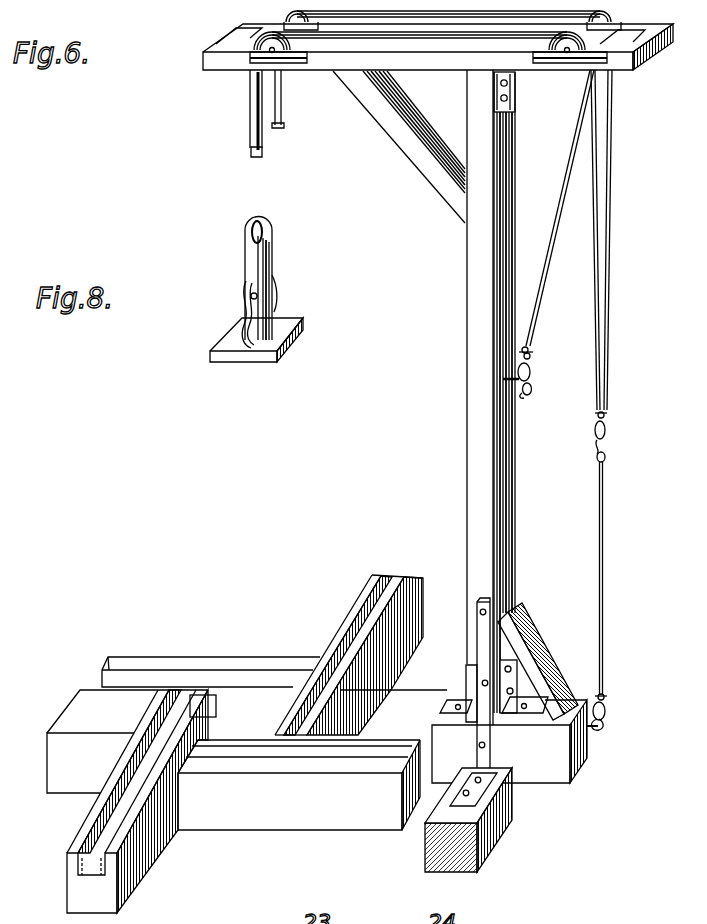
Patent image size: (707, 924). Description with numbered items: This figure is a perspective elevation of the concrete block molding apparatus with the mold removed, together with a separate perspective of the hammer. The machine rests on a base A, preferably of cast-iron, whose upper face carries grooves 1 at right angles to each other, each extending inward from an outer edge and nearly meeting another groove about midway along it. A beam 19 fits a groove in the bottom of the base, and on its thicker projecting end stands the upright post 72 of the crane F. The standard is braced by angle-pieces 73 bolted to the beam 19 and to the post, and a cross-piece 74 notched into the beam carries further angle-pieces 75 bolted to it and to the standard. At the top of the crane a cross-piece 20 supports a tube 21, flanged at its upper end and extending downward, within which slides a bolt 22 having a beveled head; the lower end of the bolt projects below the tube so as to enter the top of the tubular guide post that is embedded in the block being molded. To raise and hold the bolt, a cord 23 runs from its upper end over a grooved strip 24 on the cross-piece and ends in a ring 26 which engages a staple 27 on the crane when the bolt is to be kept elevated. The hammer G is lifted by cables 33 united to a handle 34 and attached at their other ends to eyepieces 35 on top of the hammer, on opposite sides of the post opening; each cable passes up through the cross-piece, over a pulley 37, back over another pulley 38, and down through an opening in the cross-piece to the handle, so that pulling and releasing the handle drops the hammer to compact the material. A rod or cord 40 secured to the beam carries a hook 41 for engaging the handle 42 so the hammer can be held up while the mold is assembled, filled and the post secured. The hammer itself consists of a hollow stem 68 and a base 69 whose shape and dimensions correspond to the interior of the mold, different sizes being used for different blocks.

In FIG. 6, the cross-piece 20 is at (657, 50).
In FIG. 6, the pulley 37 is at (258, 36).
In FIG. 6, the pulley 38 is at (607, 58).
In FIG. 6, the cord 23 is at (420, 25).
In FIG. 6, the grooved strip 24 is at (520, 25).
In FIG. 6, the tube 21 is at (249, 112).
In FIG. 6, the sliding bolt 22 is at (263, 152).
In FIG. 6, the cables 33 is at (283, 107).
In FIG. 6, the crane F is at (413, 397).
In FIG. 6, the upright post 72 is at (513, 530).
In FIG. 6, the ring 26 is at (529, 370).
In FIG. 6, the staple 27 is at (532, 400).
In FIG. 6, the handle 34 is at (608, 418).
In FIG. 6, the rod or cord 40 is at (603, 548).
In FIG. 6, the handle 42 is at (607, 705).
In FIG. 6, the hook 41 is at (607, 725).
In FIG. 6, the angle-pieces 73 is at (540, 657).
In FIG. 6, the angle-pieces 75 is at (477, 643).
In FIG. 6, the beam 19 is at (553, 763).
In FIG. 6, the cross-piece 74 is at (497, 817).
In FIG. 6, the grooves 1 is at (193, 672).
In FIG. 6, the base A is at (29, 702).
In FIG. 8, the hollow stem 68 is at (272, 255).
In FIG. 8, the eyepieces 35 is at (245, 292).
In FIG. 8, the sliding hammer G is at (301, 285).
In FIG. 8, the base 69 is at (215, 356).